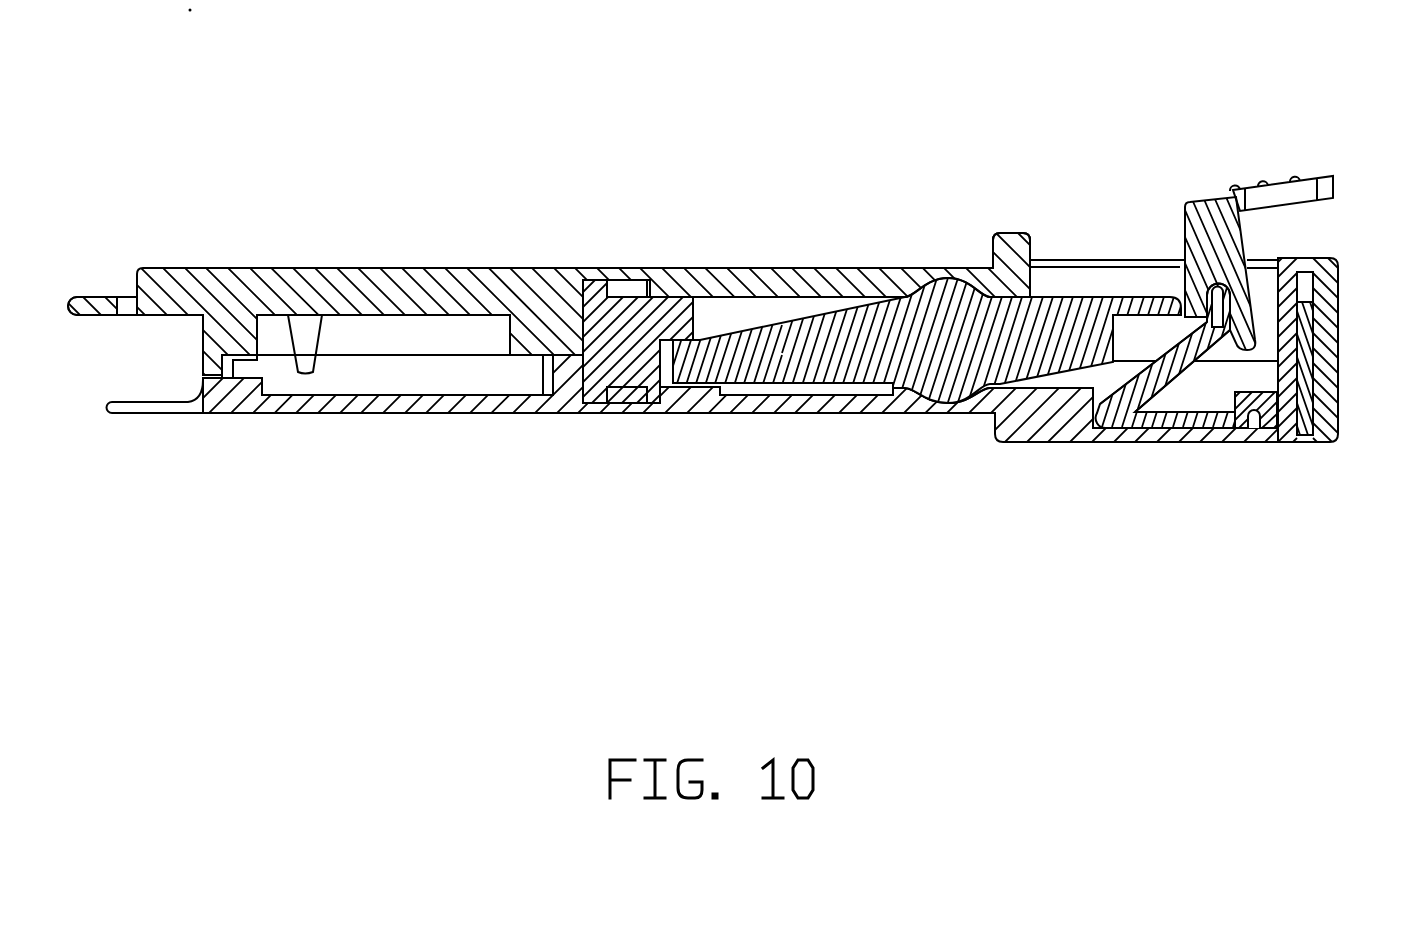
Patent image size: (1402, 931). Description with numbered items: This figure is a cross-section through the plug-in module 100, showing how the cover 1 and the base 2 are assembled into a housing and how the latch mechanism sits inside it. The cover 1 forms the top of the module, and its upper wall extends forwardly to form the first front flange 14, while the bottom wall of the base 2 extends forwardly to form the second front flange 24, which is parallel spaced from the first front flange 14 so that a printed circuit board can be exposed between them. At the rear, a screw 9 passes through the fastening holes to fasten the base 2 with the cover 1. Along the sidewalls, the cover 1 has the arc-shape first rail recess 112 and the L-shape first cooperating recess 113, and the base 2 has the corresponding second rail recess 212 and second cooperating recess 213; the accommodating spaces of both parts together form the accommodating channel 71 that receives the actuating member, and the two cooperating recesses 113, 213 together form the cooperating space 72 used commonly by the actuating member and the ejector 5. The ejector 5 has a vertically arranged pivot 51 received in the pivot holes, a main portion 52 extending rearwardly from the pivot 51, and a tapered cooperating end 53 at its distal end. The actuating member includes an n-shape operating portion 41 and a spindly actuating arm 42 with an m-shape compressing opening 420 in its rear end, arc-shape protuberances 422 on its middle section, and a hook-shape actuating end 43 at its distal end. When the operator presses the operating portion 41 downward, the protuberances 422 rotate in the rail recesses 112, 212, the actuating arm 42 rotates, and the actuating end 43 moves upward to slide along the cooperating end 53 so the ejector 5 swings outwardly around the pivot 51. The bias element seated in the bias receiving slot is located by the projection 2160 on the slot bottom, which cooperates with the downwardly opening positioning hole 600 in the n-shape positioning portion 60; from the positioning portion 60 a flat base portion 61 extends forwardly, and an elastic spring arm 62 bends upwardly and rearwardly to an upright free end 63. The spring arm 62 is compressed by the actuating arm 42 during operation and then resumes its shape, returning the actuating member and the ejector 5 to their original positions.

The plug-in module 100 is at (668, 57).
The cover 1 is at (360, 280).
The first front flange 14 is at (98, 307).
The first rail recess 112 is at (958, 283).
The first cooperating recess 113 is at (636, 287).
The base 2 is at (405, 410).
The second front flange 24 is at (143, 412).
The second rail recess 212 is at (947, 415).
The second cooperating recess 213 is at (640, 393).
The projection 2160 is at (1267, 432).
The ejector 5 is at (640, 340).
The pivot 51 is at (578, 290).
The main portion 52 is at (632, 365).
The cooperating end 53 is at (690, 350).
The accommodating channel 71 is at (788, 312).
The cooperating space 72 is at (671, 375).
The actuating end 43 is at (706, 368).
The arc-shape protuberance 422 is at (947, 293).
The actuating arm 42 is at (1047, 322).
The compressing opening 420 is at (1203, 303).
The spring arm 62 is at (1157, 357).
The base portion 61 is at (1165, 423).
The positioning portion 60 is at (1245, 413).
The free end 63 is at (1189, 204).
The operating portion 41 is at (1280, 192).
The screw 9 is at (1307, 372).
The positioning hole 600 is at (1330, 433).